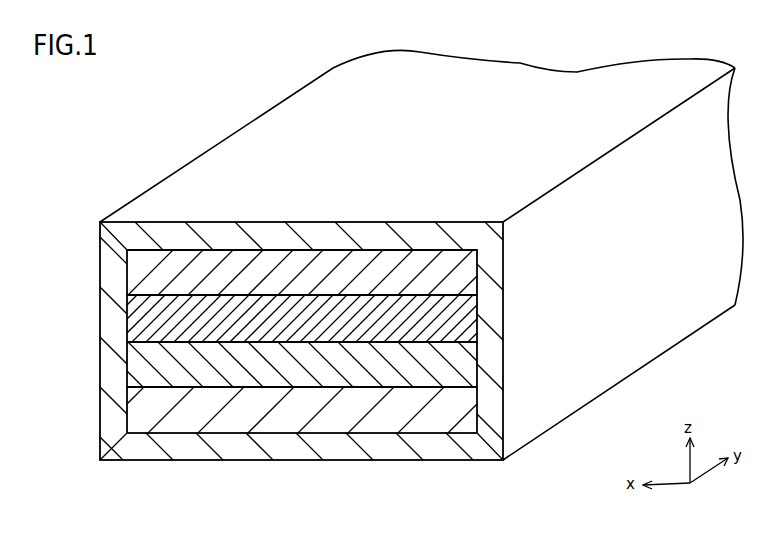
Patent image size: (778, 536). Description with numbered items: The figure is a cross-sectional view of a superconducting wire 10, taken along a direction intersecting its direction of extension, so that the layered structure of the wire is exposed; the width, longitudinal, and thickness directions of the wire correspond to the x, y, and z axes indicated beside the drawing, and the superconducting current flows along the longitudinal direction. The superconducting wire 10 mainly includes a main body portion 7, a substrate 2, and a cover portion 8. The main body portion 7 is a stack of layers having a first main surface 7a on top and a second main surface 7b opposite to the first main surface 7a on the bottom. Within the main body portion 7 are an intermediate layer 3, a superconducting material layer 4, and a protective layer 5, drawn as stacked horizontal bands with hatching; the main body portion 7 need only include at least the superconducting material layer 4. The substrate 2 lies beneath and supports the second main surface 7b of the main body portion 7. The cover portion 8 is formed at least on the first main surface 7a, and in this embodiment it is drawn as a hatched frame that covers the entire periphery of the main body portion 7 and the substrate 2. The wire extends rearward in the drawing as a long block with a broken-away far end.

The superconducting wire 10 is at (130, 142).
The cover portion 8 is at (113, 233).
The main body portion 7 is at (50, 249).
The first main surface 7a is at (150, 253).
The protective layer 5 is at (150, 278).
The superconducting material layer 4 is at (150, 317).
The intermediate layer 3 is at (155, 353).
The second main surface 7b is at (153, 383).
The substrate 2 is at (137, 412).